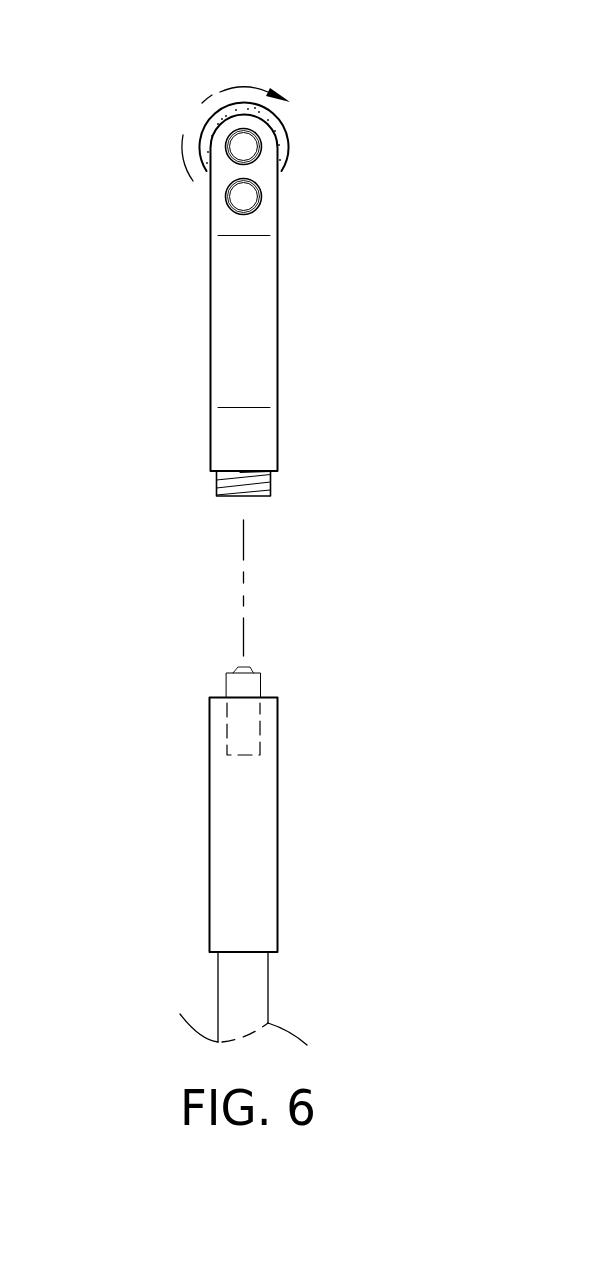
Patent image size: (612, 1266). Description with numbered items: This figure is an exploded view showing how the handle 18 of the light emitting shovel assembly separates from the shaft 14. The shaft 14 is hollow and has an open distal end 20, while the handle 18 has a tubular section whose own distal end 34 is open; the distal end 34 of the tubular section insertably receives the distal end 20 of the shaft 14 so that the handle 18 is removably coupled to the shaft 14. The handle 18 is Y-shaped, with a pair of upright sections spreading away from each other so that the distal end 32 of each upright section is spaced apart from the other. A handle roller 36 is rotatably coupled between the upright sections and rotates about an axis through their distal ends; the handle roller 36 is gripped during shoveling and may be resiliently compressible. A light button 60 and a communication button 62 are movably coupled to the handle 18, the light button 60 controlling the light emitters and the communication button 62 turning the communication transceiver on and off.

The shaft 14 is at (268, 985).
The handle 18 is at (210, 313).
The distal end 20 is at (265, 697).
The distal end 32 is at (241, 103).
The distal end 34 is at (224, 497).
The handle roller 36 is at (201, 137).
The light button 60 is at (245, 197).
The communication button 62 is at (245, 147).